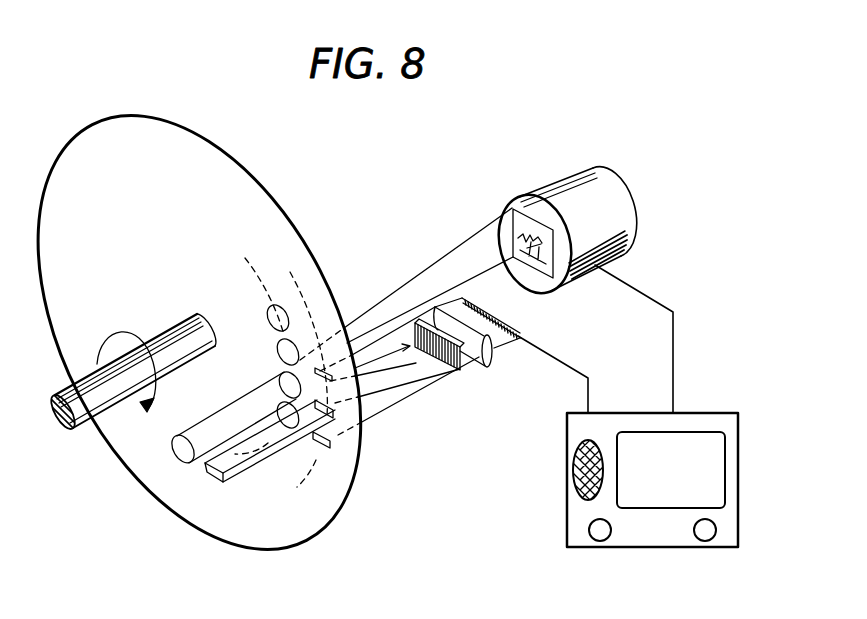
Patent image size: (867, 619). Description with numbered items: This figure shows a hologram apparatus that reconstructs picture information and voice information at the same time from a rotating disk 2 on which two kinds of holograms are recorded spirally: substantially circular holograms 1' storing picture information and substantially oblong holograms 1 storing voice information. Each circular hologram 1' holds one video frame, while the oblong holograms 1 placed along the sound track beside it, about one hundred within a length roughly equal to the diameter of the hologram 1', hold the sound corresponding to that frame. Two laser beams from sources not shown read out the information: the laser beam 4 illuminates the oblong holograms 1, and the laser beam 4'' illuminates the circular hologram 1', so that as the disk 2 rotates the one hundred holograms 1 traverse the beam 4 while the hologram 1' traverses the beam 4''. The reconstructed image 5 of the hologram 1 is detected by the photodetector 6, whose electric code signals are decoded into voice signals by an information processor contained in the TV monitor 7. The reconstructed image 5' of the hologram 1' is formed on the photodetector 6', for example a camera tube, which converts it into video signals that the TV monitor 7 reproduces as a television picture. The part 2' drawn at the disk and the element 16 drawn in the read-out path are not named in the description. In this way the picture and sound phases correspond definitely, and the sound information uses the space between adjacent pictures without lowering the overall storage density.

The disk 2 is at (213, 333).
The disc shaft 2' is at (130, 360).
The circular hologram 1' is at (265, 366).
The laser beam 4'' is at (231, 416).
The laser beam 4 is at (270, 450).
The oblong hologram 1 is at (328, 432).
The reconstructed image 5 is at (439, 369).
The cylindrical lens 16 is at (476, 358).
The photodetector 6 is at (495, 323).
The reconstructed image 5' is at (530, 212).
The photodetector 6' is at (562, 214).
The TV monitor 7 is at (566, 470).